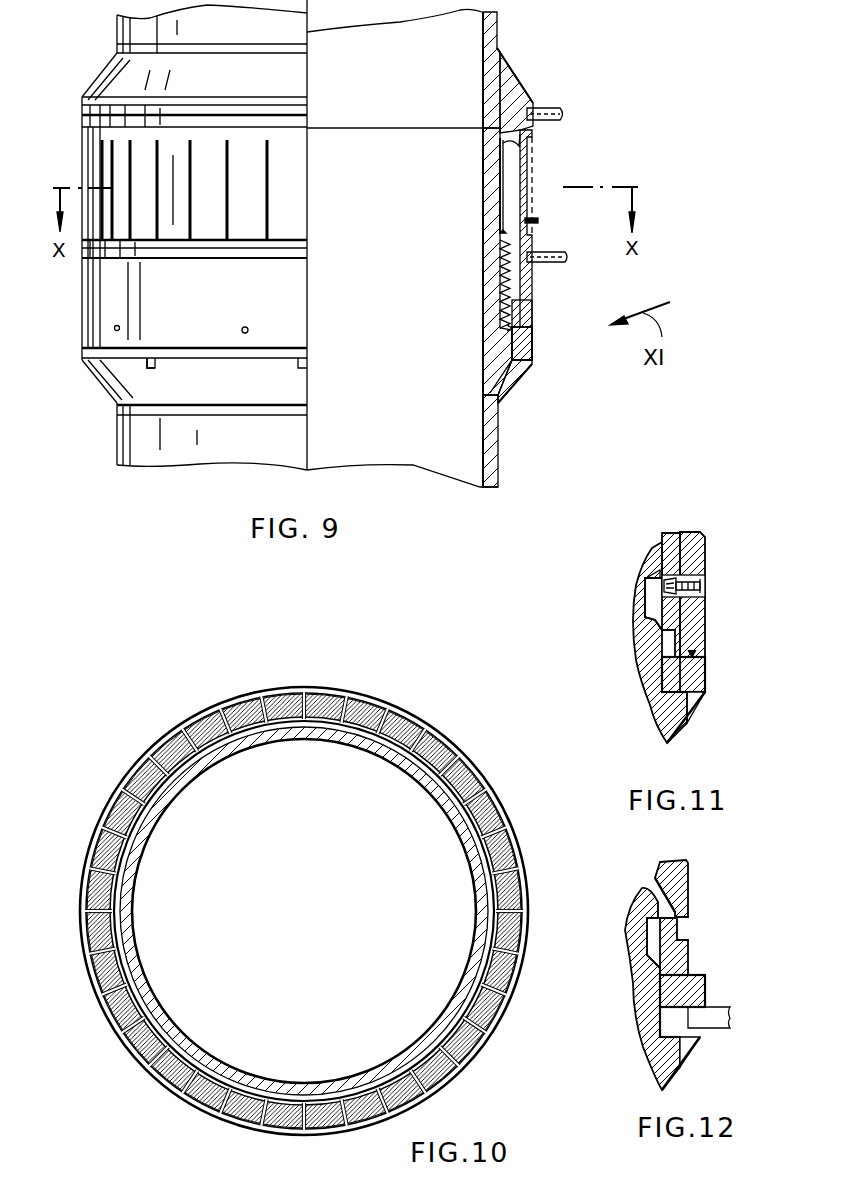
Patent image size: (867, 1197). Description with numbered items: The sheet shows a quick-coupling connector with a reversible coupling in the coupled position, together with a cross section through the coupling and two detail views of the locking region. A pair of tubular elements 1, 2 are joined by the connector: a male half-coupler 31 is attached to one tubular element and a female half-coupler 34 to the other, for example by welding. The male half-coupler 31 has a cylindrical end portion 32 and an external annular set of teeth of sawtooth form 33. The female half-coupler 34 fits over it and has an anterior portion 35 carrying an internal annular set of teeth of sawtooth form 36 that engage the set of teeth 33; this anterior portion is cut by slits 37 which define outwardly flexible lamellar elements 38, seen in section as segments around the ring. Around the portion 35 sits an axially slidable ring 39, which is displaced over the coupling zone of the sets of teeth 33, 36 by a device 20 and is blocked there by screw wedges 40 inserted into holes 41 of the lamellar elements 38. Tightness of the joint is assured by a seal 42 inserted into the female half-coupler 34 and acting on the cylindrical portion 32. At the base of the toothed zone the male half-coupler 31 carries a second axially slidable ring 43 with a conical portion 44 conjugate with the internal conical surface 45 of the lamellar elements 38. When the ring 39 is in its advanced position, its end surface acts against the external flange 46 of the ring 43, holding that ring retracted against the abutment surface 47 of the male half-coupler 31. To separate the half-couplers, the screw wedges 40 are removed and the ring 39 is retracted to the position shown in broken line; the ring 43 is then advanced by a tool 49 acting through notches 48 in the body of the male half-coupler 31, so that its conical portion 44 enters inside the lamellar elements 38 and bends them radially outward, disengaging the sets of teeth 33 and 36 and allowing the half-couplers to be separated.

In FIG. 9, the tubular element 1 is at (455, 458).
In FIG. 9, the tubular element 2 is at (497, 32).
In FIG. 9, the device 20 is at (545, 108).
In FIG. 9, the male half-coupler 31 is at (508, 390).
In FIG. 11, the male half-coupler 31 is at (672, 728).
In FIG. 12, the male half-coupler 31 is at (658, 1067).
In FIG. 9, the cylindrical end portion 32 is at (492, 158).
In FIG. 10, the cylindrical end portion 32 is at (128, 852).
In FIG. 9, the annular set of teeth of sawtooth form 33 is at (503, 280).
In FIG. 12, the annular set of teeth of sawtooth form 33 is at (628, 907).
In FIG. 9, the female half-coupler 34 is at (503, 88).
In FIG. 9, the anterior portion 35 is at (537, 221).
In FIG. 9, the internal annular set of teeth of sawtooth form 36 is at (513, 300).
In FIG. 9, the slits 37 is at (190, 228).
In FIG. 10, the slits 37 is at (186, 1094).
In FIG. 9, the lamellar elements 38 is at (245, 228).
In FIG. 10, the lamellar elements 38 is at (122, 1017).
In FIG. 11, the lamellar elements 38 is at (665, 532).
In FIG. 12, the lamellar elements 38 is at (677, 880).
In FIG. 9, the axially slidable ring 39 is at (533, 163).
In FIG. 10, the axially slidable ring 39 is at (123, 775).
In FIG. 11, the axially slidable ring 39 is at (702, 557).
In FIG. 9, the screw wedges 40 is at (512, 328).
In FIG. 11, the screw wedges 40 is at (703, 585).
In FIG. 11, the holes 41 is at (650, 577).
In FIG. 9, the seal 42 is at (527, 137).
In FIG. 9, the axially slidable ring 43 is at (532, 357).
In FIG. 11, the axially slidable ring 43 is at (707, 683).
In FIG. 12, the axially slidable ring 43 is at (705, 987).
In FIG. 11, the conical portion 44 is at (653, 655).
In FIG. 12, the conical portion 44 is at (667, 962).
In FIG. 11, the internal conical surface 45 is at (643, 618).
In FIG. 12, the internal conical surface 45 is at (647, 973).
In FIG. 11, the external flange 46 is at (695, 653).
In FIG. 11, the abutment surface 47 is at (650, 717).
In FIG. 9, the notches 48 is at (147, 367).
In FIG. 11, the notches 48 is at (692, 702).
In FIG. 12, the notches 48 is at (695, 1047).
In FIG. 12, the tool 49 is at (727, 1017).